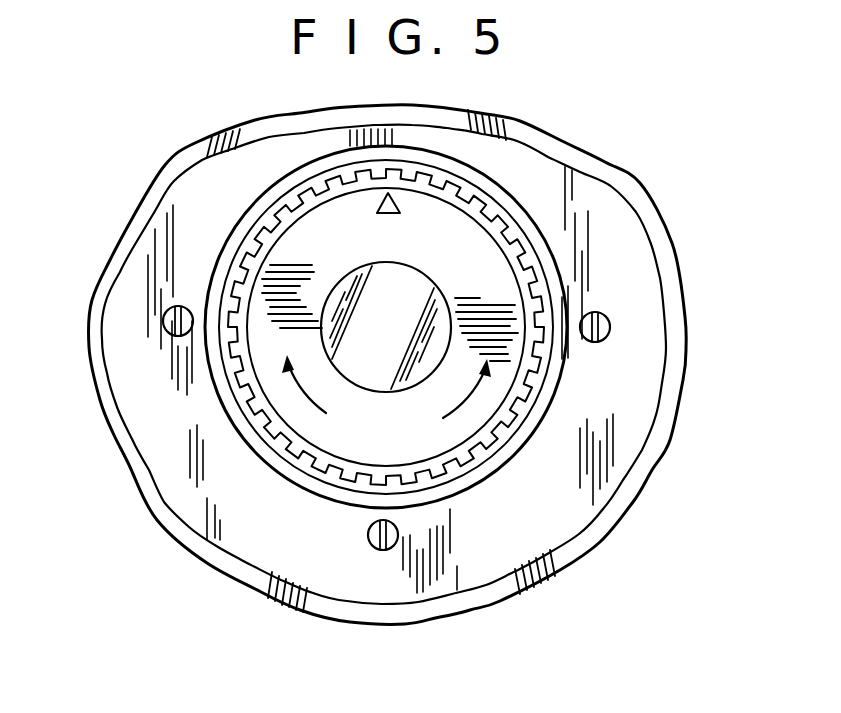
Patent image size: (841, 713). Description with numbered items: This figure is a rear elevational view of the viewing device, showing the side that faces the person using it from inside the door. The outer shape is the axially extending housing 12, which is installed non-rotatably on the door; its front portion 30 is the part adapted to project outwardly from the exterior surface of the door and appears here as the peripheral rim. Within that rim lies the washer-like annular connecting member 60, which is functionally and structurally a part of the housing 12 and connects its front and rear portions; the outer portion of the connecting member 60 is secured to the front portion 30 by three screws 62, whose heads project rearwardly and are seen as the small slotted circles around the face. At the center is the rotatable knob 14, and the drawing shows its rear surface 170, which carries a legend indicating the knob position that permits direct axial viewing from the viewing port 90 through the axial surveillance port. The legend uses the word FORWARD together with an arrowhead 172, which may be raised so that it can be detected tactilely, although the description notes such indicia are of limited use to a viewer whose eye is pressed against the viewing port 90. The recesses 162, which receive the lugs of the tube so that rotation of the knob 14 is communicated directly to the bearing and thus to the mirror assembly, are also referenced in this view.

The housing 12 is at (645, 178).
The front portion 30 is at (195, 143).
The connecting member 60 is at (637, 267).
The knob 14 is at (253, 452).
The rear surface 170 is at (260, 337).
The viewing port 90 is at (345, 272).
The arrowhead 172 is at (397, 207).
The recesses 162 is at (610, 331).
The screws 62 is at (377, 550).